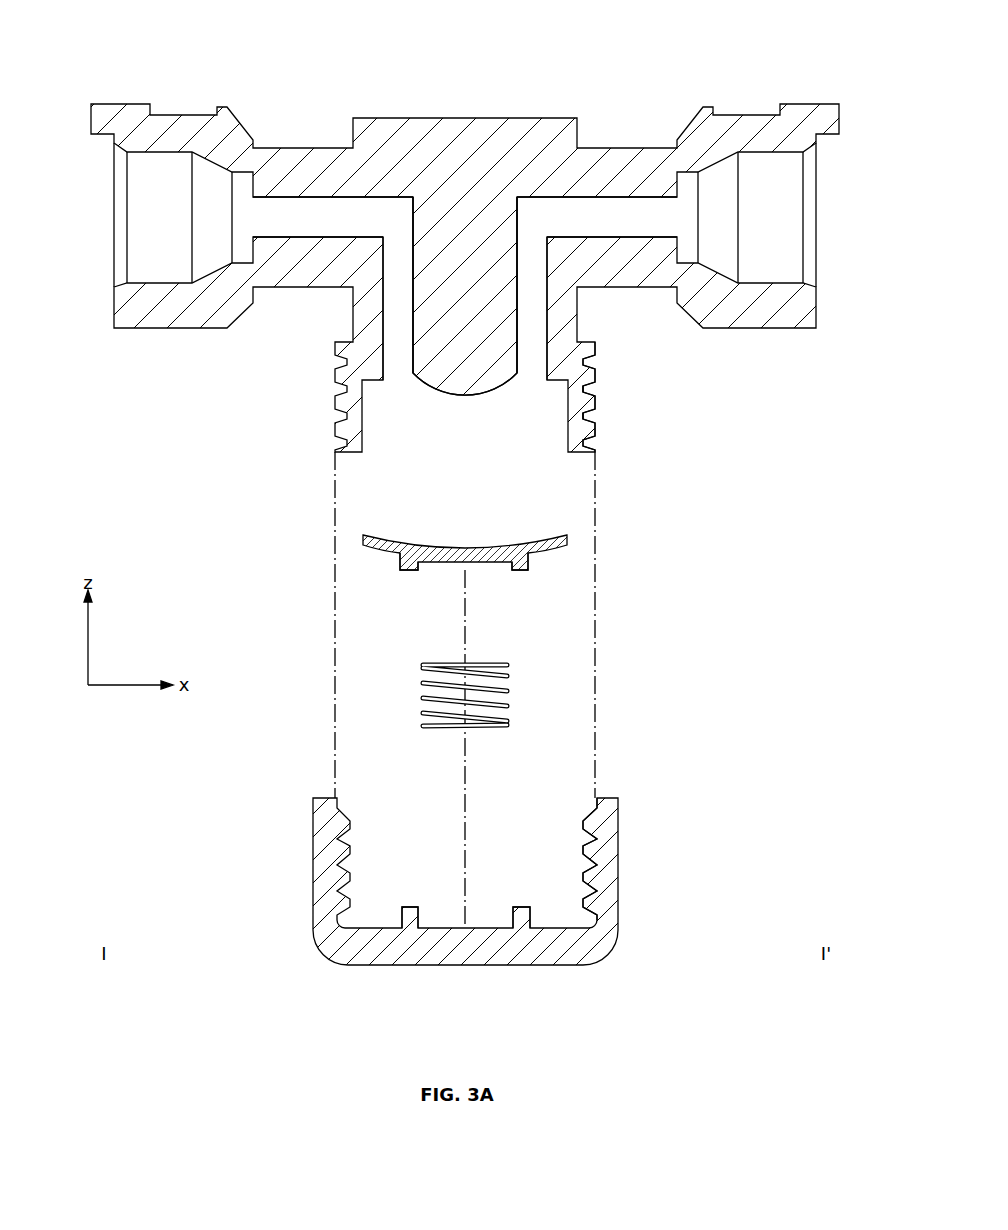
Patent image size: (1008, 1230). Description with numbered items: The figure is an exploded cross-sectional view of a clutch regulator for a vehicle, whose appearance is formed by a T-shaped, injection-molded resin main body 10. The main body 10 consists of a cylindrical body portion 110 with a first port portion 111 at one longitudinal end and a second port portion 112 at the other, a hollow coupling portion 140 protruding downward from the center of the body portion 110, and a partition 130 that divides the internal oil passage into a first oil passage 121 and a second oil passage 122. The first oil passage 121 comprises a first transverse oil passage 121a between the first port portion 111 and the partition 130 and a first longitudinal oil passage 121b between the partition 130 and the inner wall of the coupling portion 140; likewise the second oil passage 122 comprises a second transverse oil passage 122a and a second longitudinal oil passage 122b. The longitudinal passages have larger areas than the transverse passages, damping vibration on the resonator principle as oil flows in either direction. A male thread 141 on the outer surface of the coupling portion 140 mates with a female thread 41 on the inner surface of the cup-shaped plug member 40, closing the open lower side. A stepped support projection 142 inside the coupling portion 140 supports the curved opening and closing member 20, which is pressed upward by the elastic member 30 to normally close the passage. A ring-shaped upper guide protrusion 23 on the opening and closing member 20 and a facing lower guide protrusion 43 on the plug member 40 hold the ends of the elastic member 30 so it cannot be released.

The main body 10 is at (465, 253).
The body portion 110 is at (290, 160).
The first port portion 111 is at (148, 318).
The second port portion 112 is at (785, 315).
The first oil passage 121 is at (296, 313).
The first transverse oil passage 121a is at (301, 222).
The first longitudinal oil passage 121b is at (402, 327).
The second oil passage 122 is at (585, 198).
The second transverse oil passage 122a is at (624, 226).
The second longitudinal oil passage 122b is at (536, 270).
The partition 130 is at (455, 380).
The coupling portion 140 is at (567, 327).
The male thread 141 is at (590, 418).
The support projection 142 is at (585, 392).
The opening and closing member 20 is at (508, 596).
The upper guide protrusion 23 is at (520, 570).
The elastic member 30 is at (396, 683).
The plug member 40 is at (525, 866).
The female thread 41 is at (590, 843).
The lower guide protrusion 43 is at (522, 907).